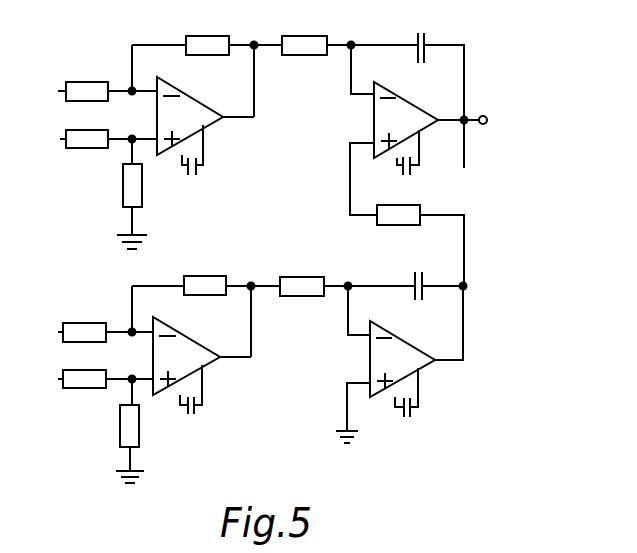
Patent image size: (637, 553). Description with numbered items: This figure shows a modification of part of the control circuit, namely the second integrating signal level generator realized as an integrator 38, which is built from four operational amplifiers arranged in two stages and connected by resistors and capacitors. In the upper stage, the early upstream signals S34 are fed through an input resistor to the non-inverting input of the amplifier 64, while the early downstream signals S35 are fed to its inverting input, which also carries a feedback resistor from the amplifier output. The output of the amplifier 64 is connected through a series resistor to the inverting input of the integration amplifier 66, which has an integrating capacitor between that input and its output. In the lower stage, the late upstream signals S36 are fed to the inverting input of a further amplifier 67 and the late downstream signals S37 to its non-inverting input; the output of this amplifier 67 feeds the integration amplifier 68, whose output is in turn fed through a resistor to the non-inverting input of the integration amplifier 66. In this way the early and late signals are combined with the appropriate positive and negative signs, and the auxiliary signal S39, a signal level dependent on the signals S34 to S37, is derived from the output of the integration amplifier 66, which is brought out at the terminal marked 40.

The integrator 38 is at (305, 392).
The output terminal 40 is at (481, 114).
The amplifier 64 is at (192, 110).
The integration amplifier 66 is at (418, 113).
The further amplifier 67 is at (190, 351).
The integration amplifier 68 is at (402, 354).
The early upstream signals S34 is at (60, 139).
The early downstream signals S35 is at (58, 91).
The late upstream signals S36 is at (58, 332).
The late downstream signals S37 is at (58, 379).
The auxiliary signal S39 is at (462, 157).